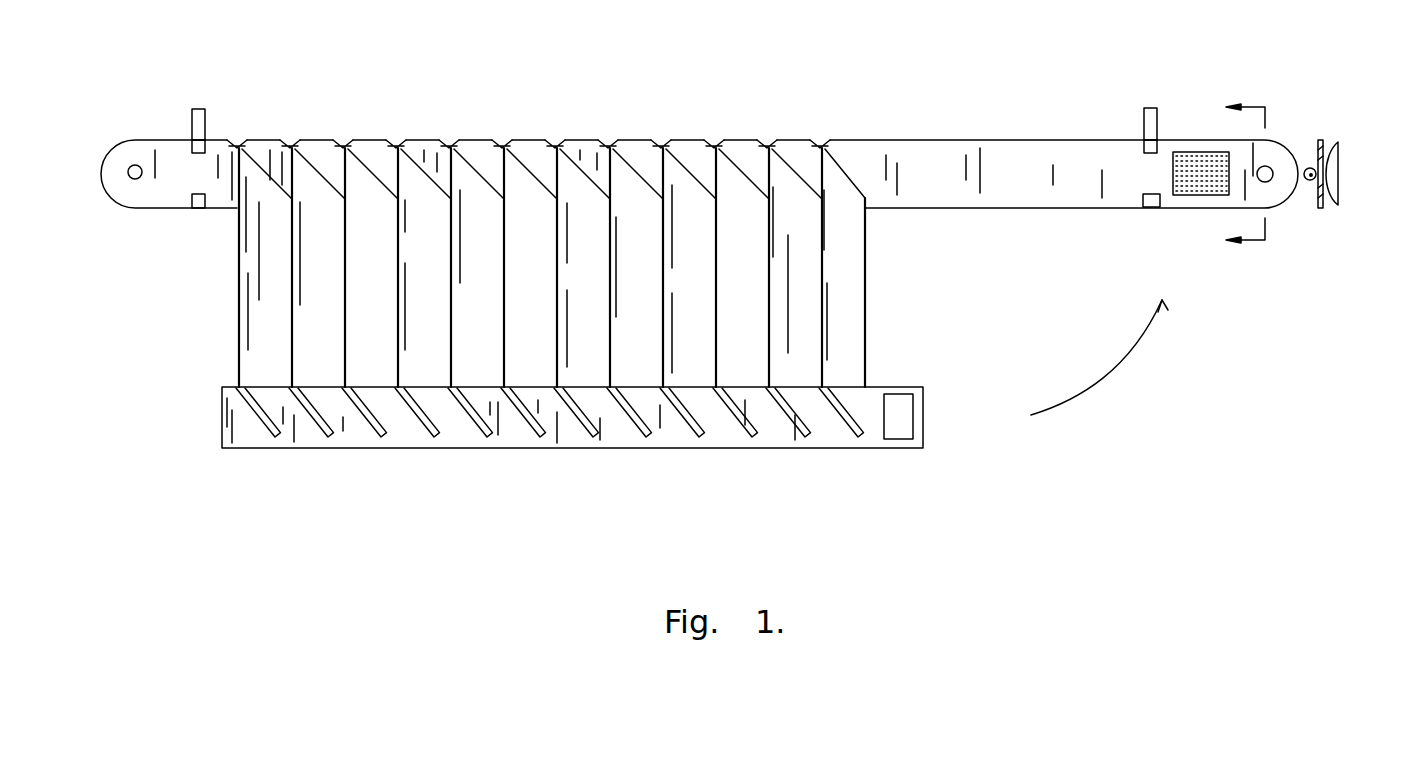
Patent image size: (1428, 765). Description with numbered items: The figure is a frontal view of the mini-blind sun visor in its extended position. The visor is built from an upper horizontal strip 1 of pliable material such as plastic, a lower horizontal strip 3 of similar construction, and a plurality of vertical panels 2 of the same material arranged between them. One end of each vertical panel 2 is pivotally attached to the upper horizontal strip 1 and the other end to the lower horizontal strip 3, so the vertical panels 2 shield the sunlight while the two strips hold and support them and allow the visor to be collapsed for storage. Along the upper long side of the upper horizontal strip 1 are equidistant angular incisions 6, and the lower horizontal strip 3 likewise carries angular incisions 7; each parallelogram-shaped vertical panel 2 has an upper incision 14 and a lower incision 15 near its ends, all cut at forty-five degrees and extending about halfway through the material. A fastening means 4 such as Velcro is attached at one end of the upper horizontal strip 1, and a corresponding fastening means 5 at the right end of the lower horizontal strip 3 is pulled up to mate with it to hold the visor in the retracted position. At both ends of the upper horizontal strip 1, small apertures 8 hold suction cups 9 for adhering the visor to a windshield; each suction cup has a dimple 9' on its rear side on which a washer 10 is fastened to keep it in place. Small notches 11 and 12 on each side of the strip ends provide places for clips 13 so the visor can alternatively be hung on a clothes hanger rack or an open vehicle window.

The upper horizontal strip 1 is at (148, 243).
The vertical panels 2 is at (257, 329).
The lower horizontal strip 3 is at (246, 437).
The fastening means 4 is at (1205, 195).
The corresponding fastening means 5 is at (905, 430).
The angular incisions 6 is at (865, 193).
The angular incisions 7 is at (848, 413).
The apertures 8 is at (130, 172).
The suction cups 9 is at (1377, 206).
The dimples 9' is at (1308, 244).
The washer 10 is at (1323, 140).
The notch 11 is at (192, 207).
The notch 12 is at (1150, 205).
The clips 13 is at (200, 108).
The upper incision 14 is at (471, 168).
The lower incision 15 is at (476, 509).